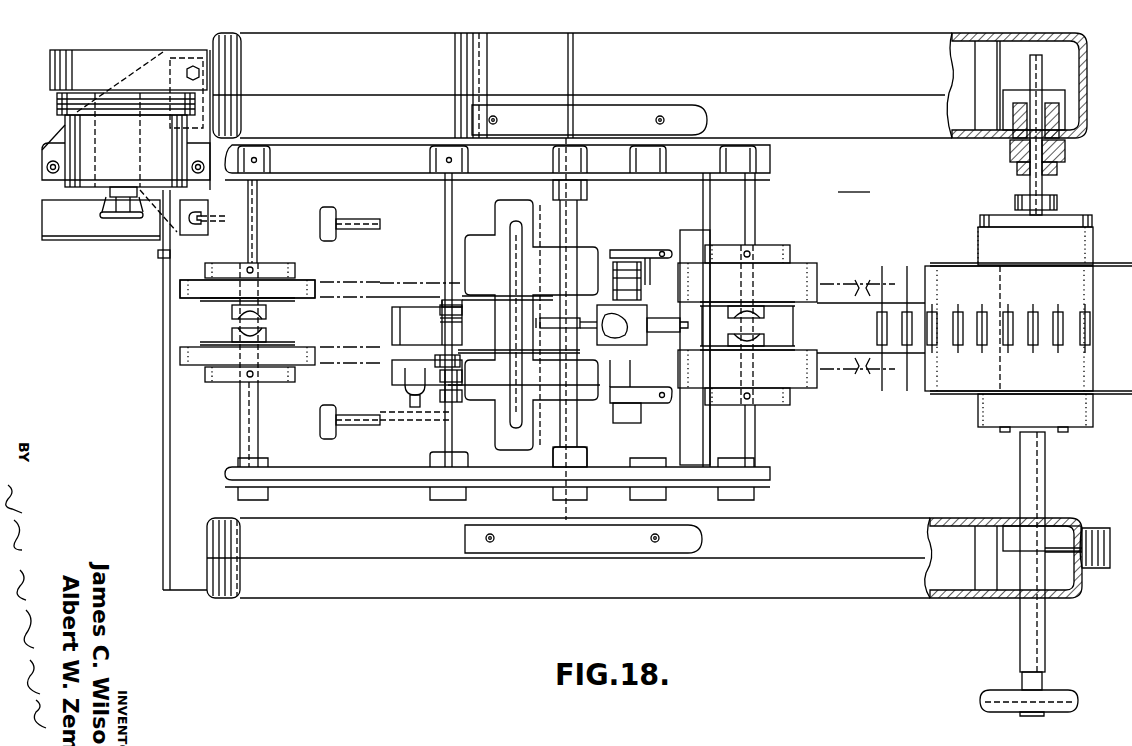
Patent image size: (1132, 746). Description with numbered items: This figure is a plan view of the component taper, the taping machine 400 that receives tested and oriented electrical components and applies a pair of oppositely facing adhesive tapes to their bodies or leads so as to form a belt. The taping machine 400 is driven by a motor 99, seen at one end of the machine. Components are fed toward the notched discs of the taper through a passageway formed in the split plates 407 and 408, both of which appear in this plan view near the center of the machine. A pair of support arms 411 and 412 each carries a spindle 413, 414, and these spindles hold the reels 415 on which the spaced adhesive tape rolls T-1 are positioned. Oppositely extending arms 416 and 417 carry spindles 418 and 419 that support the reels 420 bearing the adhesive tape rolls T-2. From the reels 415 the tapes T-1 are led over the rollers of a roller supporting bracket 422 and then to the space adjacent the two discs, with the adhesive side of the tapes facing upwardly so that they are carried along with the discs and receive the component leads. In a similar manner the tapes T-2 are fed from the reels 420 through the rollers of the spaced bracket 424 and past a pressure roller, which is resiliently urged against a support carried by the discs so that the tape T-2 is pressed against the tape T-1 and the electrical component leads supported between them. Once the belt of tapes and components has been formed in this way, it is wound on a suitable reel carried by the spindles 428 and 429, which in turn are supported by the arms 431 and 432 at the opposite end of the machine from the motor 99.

The taping machine 400 is at (879, 152).
The arm 431 is at (1063, 47).
The arm 432 is at (934, 600).
The spindle 428 is at (1052, 190).
The spindle 429 is at (1045, 492).
The arm 417 is at (306, 180).
The arm 416 is at (288, 470).
The spindle 419 is at (257, 222).
The spindle 418 is at (258, 430).
The support arm 412 is at (718, 184).
The support arm 411 is at (710, 470).
The spindle 414 is at (748, 200).
The spindle 413 is at (750, 428).
The reel 415 is at (768, 307).
The reel 420 is at (275, 333).
The roller supporting bracket 424 is at (410, 265).
The roller supporting bracket 422 is at (618, 256).
The split plate 408 is at (462, 300).
The split plate 407 is at (508, 356).
The motor 99 is at (80, 163).
The adhesive tape roll T-1 is at (808, 270).
The adhesive tape roll T-2 is at (195, 348).